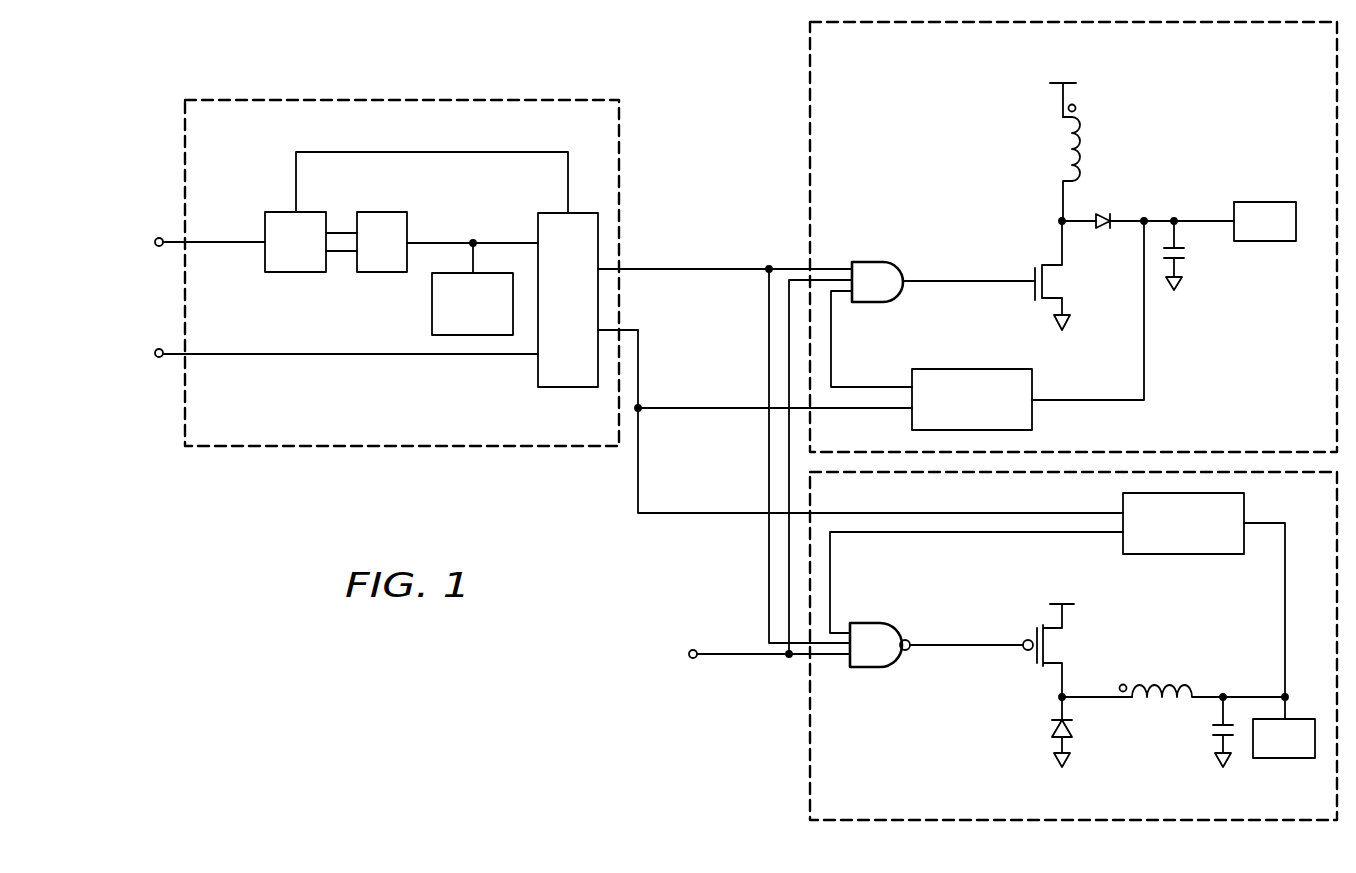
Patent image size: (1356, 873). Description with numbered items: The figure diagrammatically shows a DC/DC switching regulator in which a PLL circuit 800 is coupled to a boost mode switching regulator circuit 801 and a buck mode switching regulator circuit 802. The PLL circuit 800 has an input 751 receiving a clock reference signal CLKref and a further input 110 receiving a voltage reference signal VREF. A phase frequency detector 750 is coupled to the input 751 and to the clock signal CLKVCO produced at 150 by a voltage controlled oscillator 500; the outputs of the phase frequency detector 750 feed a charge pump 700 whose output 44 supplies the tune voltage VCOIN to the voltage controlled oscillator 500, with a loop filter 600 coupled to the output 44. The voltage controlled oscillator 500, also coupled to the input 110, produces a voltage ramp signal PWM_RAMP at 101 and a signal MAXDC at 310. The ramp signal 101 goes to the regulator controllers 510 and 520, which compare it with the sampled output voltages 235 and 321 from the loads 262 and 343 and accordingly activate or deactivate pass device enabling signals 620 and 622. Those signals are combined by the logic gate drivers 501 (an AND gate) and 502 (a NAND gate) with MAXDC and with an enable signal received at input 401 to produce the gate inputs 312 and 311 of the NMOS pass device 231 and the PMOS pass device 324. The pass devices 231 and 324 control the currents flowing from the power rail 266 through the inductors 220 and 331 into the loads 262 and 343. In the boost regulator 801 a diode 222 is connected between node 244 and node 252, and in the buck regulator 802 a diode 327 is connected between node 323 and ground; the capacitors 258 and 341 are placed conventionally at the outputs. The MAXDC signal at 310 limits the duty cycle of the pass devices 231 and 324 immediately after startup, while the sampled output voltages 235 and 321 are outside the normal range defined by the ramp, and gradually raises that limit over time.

The PLL circuit 800 is at (403, 99).
The phase frequency detector 750 is at (296, 273).
The input 751 is at (228, 241).
The charge pump 700 is at (383, 211).
The clock signal CLKVCO 150 is at (295, 168).
The output 44 is at (498, 242).
The loop filter 600 is at (431, 304).
The voltage controlled oscillator 500 is at (568, 388).
The input 110 is at (228, 353).
The MAXDC signal output 310 is at (768, 268).
The voltage ramp signal PWM_RAMP 101 is at (710, 514).
The input 401 is at (745, 656).
The boost mode switching regulator circuit 801 is at (809, 80).
The logic gate driver 501 is at (872, 261).
The gate input 312 is at (945, 280).
The pass device enabling signal 620 is at (832, 360).
The regulator controller 510 is at (968, 368).
The NMOS pass device 231 is at (1035, 268).
The power rail 266 is at (1065, 82).
The inductor 220 is at (1083, 148).
The node 244 is at (1062, 200).
The diode 222 is at (1105, 230).
The sampled output voltage 235 is at (1145, 333).
The capacitor 258 is at (1186, 258).
The node 252 is at (1200, 220).
The load 262 is at (1265, 201).
The buck mode switching regulator circuit 802 is at (809, 772).
The regulator controller 520 is at (1183, 555).
The pass device enabling signal 622 is at (831, 572).
The logic gate driver 502 is at (870, 668).
The gate input 311 is at (968, 648).
The PMOS pass device 324 is at (1030, 640).
The node 323 is at (1097, 700).
The diode 327 is at (1050, 722).
The inductor 331 is at (1156, 680).
The capacitor 341 is at (1210, 731).
The sampled output voltage 321 is at (1284, 624).
The load 343 is at (1285, 759).